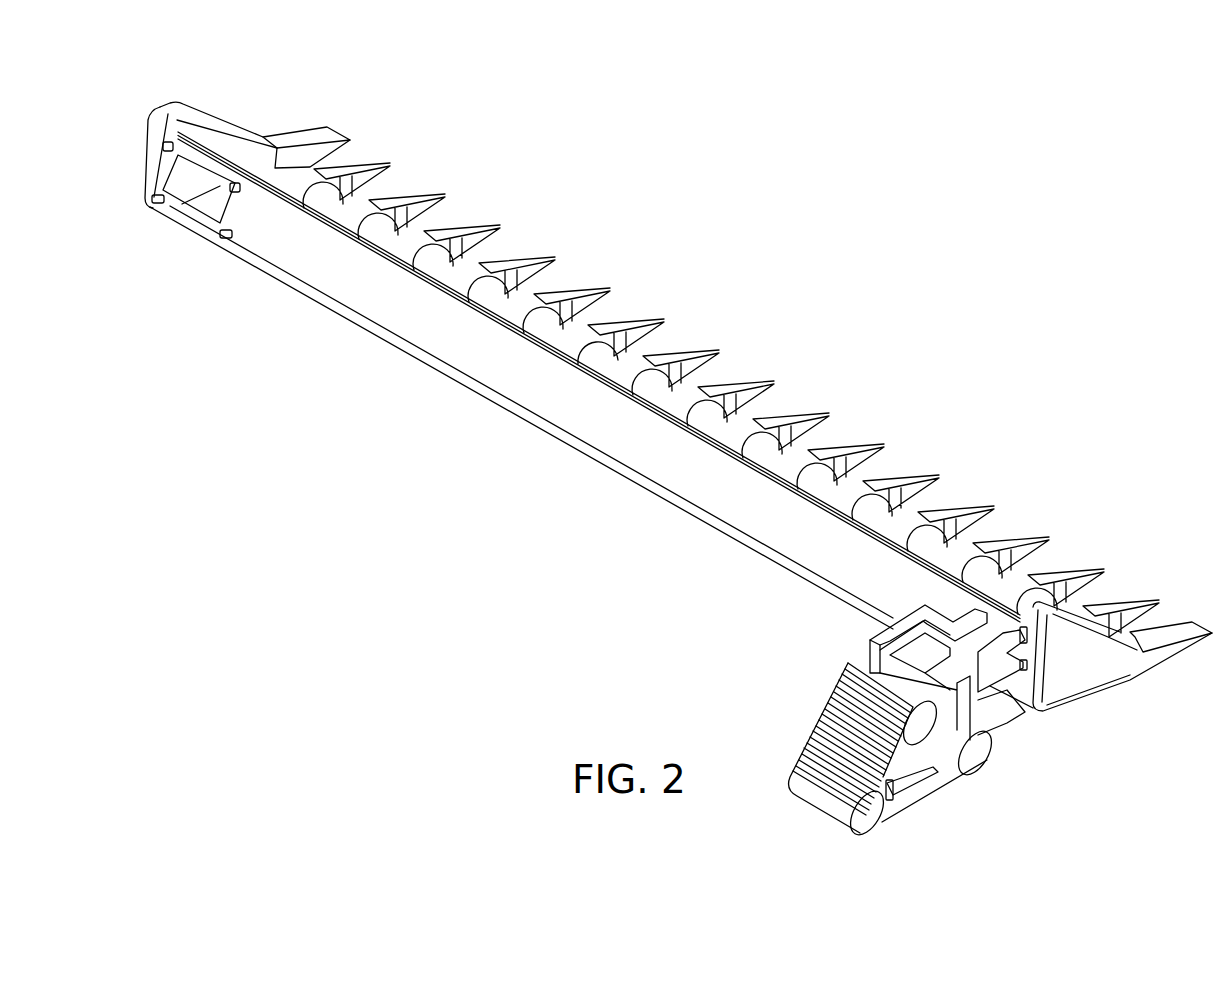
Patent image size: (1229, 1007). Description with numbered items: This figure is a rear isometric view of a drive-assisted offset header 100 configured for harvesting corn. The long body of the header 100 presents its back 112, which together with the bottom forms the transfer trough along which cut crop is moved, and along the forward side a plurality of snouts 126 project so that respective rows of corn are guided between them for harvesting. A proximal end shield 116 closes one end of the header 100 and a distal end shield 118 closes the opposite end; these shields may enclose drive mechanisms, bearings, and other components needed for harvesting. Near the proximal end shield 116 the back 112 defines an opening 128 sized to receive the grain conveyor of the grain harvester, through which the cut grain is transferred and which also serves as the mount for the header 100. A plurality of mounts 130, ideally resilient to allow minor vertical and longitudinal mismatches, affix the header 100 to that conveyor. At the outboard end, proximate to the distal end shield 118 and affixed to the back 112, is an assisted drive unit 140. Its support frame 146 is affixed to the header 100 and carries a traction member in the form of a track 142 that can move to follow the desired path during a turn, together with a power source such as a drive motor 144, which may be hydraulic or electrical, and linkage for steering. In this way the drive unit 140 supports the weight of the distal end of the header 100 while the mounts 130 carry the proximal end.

The drive-assisted offset header 100 is at (706, 162).
The back 112 is at (318, 260).
The proximal end shield 116 is at (193, 191).
The distal end shield 118 is at (1082, 698).
The snouts 126 is at (479, 224).
The opening 128 is at (212, 124).
The mounts 130 is at (144, 120).
The assisted drive unit 140 is at (862, 645).
The track 142 is at (822, 813).
The drive motor 144 is at (903, 789).
The support frame 146 is at (1003, 741).